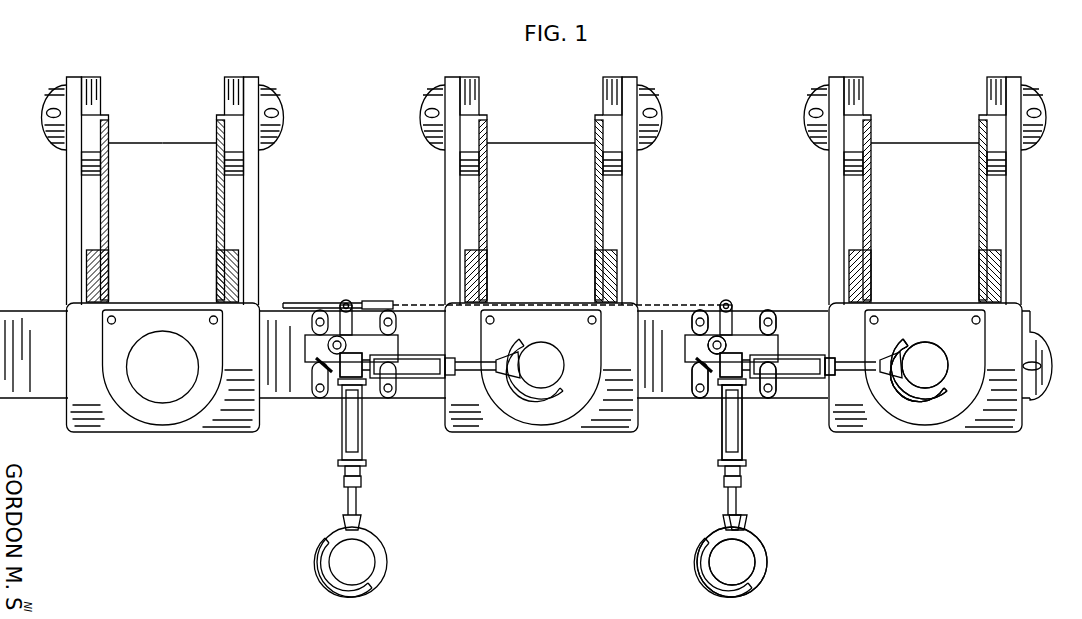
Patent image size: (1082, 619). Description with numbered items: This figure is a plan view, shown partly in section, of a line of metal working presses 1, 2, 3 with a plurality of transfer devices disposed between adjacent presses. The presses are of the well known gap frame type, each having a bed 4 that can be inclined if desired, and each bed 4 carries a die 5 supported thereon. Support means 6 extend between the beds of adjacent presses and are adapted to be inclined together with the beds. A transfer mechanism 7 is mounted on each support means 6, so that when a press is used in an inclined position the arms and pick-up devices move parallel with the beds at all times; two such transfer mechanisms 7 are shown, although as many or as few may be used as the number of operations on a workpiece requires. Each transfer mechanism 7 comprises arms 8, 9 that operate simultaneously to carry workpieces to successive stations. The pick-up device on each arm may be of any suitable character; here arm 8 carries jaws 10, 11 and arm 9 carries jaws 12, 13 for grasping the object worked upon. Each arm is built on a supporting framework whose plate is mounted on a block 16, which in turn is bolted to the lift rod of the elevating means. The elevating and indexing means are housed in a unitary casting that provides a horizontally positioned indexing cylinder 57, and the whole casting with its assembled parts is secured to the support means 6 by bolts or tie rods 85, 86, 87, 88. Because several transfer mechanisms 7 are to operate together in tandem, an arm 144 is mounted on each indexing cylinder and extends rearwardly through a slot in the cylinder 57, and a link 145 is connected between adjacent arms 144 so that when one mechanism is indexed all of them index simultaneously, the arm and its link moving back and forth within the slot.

The metal working press 1 is at (826, 221).
The metal working press 2 is at (442, 232).
The metal working press 3 is at (63, 221).
The bed 4 is at (111, 430).
The die 5 is at (170, 414).
The support means 6 is at (407, 390).
The transfer mechanism 7 is at (338, 385).
The arm 8 is at (805, 353).
The arm 9 is at (722, 432).
The jaw 10 is at (910, 345).
The jaw 11 is at (945, 384).
The jaw 12 is at (706, 540).
The jaw 13 is at (758, 570).
The block 16 is at (752, 366).
The indexing cylinder 57 is at (740, 334).
The bolt or tie rod 85 is at (700, 392).
The bolt or tie rod 86 is at (700, 316).
The bolt or tie rod 87 is at (770, 392).
The bolt or tie rod 88 is at (768, 316).
The arm 144 is at (722, 322).
The link 145 is at (662, 304).